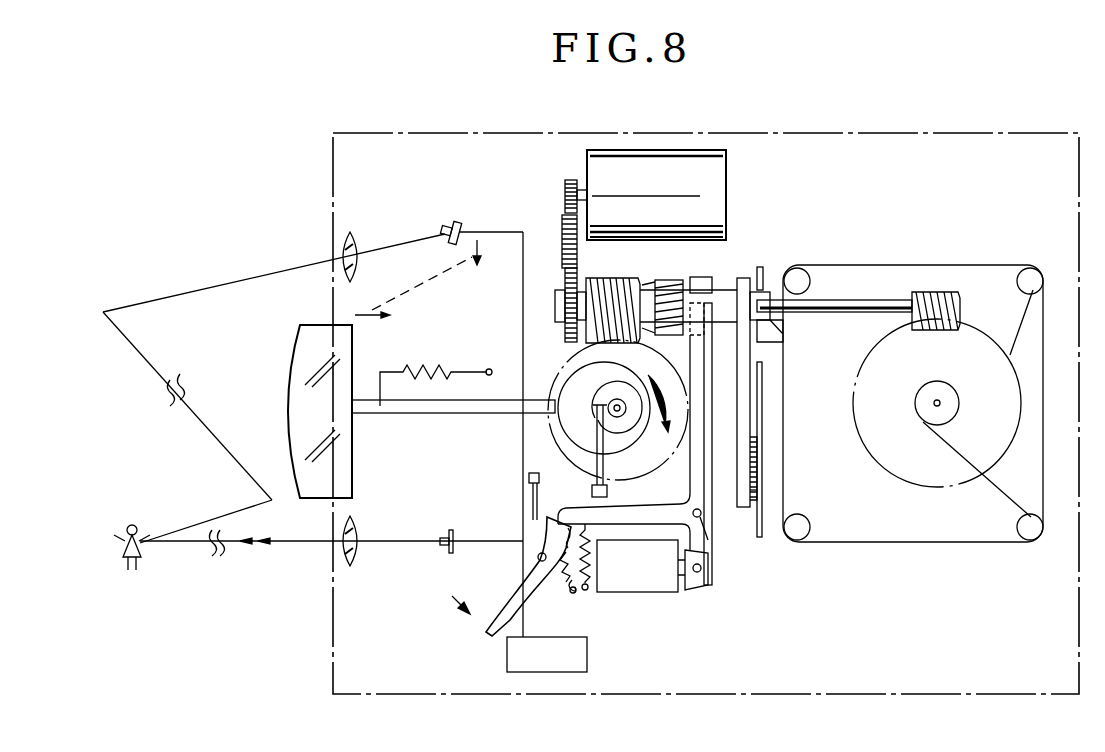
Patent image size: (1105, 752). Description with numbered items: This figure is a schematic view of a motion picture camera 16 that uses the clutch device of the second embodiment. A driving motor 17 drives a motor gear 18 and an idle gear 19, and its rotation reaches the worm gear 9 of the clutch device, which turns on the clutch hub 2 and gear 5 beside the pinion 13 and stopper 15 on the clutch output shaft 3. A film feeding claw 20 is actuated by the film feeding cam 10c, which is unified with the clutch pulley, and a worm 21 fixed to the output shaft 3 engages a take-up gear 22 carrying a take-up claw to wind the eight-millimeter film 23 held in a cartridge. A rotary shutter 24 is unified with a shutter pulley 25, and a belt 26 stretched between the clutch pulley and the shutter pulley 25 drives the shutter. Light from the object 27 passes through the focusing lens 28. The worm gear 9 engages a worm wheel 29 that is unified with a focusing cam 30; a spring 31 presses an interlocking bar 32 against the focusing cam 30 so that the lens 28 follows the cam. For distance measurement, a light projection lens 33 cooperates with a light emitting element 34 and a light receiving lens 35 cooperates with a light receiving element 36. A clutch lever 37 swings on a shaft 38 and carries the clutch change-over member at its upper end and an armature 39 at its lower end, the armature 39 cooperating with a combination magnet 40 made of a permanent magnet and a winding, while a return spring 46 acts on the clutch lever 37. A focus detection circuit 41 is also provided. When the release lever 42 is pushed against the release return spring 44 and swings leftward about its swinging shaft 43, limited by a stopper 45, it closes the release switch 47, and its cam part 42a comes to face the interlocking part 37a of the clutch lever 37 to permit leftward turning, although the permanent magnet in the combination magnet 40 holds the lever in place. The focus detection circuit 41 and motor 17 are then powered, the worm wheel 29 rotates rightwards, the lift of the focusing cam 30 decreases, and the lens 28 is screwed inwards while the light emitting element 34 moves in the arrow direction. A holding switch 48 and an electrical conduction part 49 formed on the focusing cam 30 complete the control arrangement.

The hub 2 is at (555, 305).
The output shaft 3 is at (848, 300).
The gear 5 is at (565, 336).
The worm gear 9 is at (612, 276).
The film feeding cam 10c is at (764, 285).
The pinion gear 13 is at (659, 283).
The stopper 15 is at (701, 278).
The motion picture camera 16 is at (333, 153).
The driving motor 17 is at (652, 175).
The motor gear 18 is at (565, 187).
The idle gear 19 is at (562, 230).
The film feeding claw 20 is at (782, 330).
The worm 21 is at (931, 292).
The take-up gear 22 is at (1016, 435).
The 8 mm film 23 is at (762, 380).
The rotary shutter 24 is at (750, 420).
The shutter pulley 25 is at (757, 490).
The belt 26 is at (753, 439).
The object 27 is at (132, 522).
The focusing lens 28 is at (293, 347).
The worm wheel 29 is at (548, 385).
The focusing cam 30 is at (555, 435).
The spring 31 is at (427, 362).
The interlocking bar 32 is at (405, 413).
The light projection lens 33 is at (340, 248).
The light emitting element 34 is at (448, 225).
The light receiving lens 35 is at (343, 556).
The light receiving element 36 is at (441, 550).
The clutch lever 37 is at (705, 450).
The interlocking part 37a is at (565, 524).
The shaft 38 is at (705, 534).
The armature 39 is at (705, 583).
The combination magnet 40 is at (650, 580).
The focus detection circuit 41 is at (587, 655).
The release lever 42 is at (487, 630).
The cam part 42a is at (564, 542).
The swinging shaft 43 is at (540, 562).
The release return spring 44 is at (575, 592).
The stopper 45 is at (562, 576).
The return spring 46 is at (588, 563).
The release switch 47 is at (529, 478).
The holding switch 48 is at (592, 492).
The electrical conduction part 49 is at (628, 430).